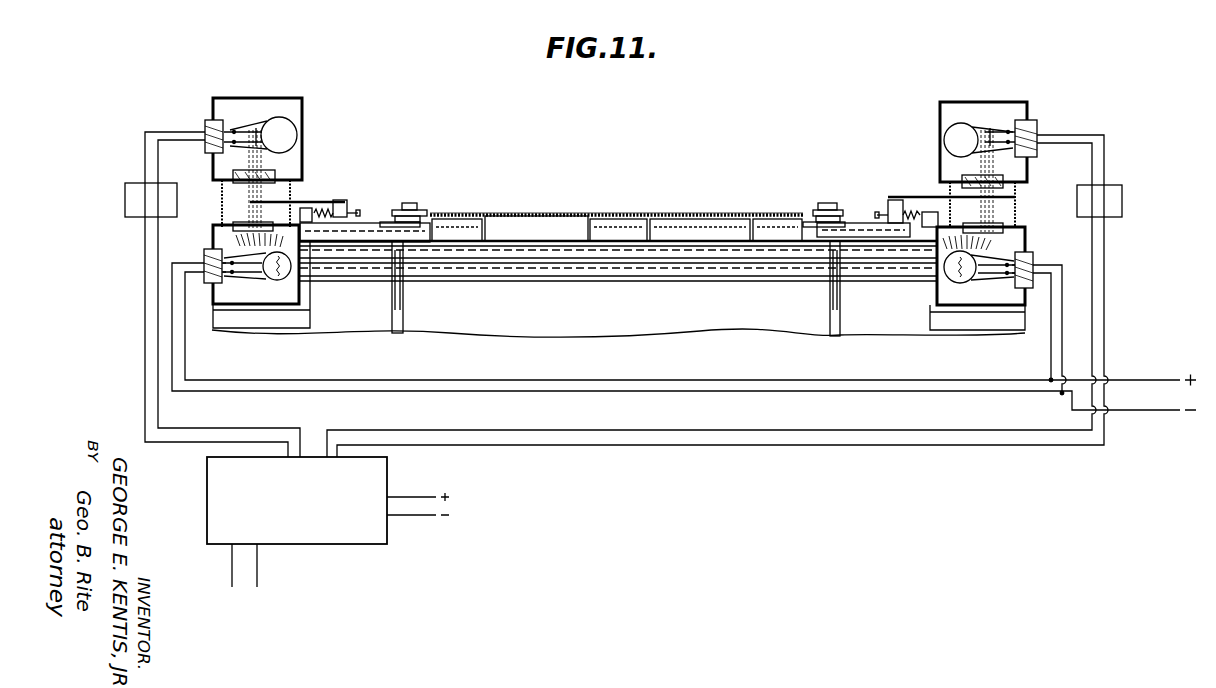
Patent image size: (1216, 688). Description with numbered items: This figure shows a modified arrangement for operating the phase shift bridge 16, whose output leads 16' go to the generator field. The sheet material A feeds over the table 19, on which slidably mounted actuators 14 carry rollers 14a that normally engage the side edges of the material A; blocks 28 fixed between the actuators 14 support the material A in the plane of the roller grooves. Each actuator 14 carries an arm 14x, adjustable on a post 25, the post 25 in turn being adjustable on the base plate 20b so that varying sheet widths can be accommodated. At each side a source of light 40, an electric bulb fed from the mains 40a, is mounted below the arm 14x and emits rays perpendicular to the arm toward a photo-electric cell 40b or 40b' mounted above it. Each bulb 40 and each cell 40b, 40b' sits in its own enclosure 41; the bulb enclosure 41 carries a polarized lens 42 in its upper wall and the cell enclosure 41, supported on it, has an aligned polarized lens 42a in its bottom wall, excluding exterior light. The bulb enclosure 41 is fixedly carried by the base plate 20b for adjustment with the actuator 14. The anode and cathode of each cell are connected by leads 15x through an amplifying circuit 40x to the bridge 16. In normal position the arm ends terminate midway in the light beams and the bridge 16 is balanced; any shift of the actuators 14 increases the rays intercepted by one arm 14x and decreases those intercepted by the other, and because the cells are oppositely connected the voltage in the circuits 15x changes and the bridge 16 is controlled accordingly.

The enclosure 41 is at (275, 98).
The source of light 40 is at (276, 283).
The photo-electric cell 40b is at (961, 134).
The photo-electric cell 40b' is at (277, 173).
The amplifying circuit 40x is at (128, 200).
The mains 40a is at (1138, 410).
The leads 15x is at (227, 428).
The phase shift bridge 16 is at (297, 522).
The output leads 16' is at (418, 522).
The lens 42 is at (997, 217).
The lens 42a is at (1008, 191).
The actuator 14 is at (858, 246).
The roller 14a is at (460, 195).
The arm 14x is at (308, 200).
The post 25 is at (344, 207).
The block 28 is at (586, 226).
The table 19 is at (638, 306).
The base plate 20b is at (365, 238).
The sheet material A is at (685, 212).